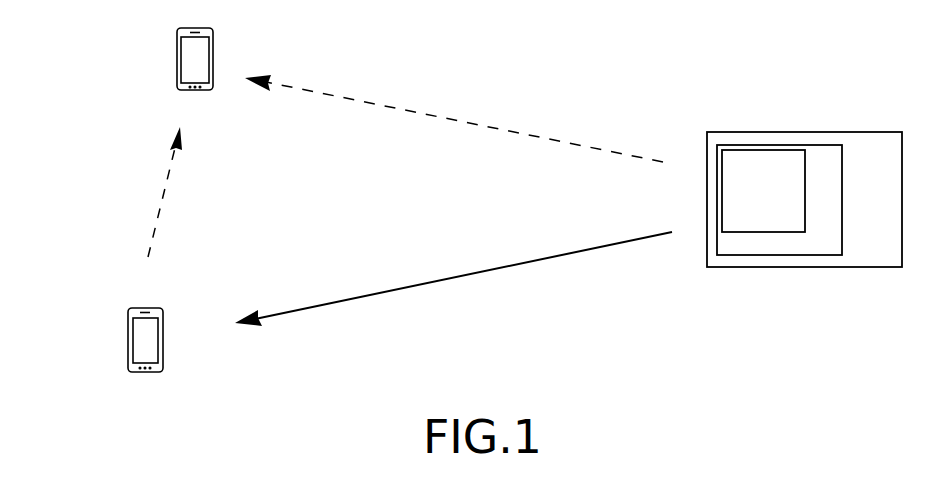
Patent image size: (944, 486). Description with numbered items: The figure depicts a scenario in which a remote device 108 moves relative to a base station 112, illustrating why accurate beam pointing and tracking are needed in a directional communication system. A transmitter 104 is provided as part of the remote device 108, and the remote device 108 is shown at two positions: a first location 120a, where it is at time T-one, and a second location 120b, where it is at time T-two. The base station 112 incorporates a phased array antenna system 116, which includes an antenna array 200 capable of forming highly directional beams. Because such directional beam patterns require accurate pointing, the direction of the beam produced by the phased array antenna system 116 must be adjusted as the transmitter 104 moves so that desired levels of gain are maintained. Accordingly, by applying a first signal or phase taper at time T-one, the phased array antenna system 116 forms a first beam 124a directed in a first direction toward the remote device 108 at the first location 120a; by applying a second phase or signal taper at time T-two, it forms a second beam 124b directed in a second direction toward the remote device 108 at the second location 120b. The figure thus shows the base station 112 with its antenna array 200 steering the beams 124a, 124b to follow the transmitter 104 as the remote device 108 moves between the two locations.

The transmitter 104 is at (205, 90).
The remote device 108 is at (168, 43).
The base station 112 is at (855, 132).
The phased array antenna system 116 is at (735, 150).
The antenna array 200 is at (790, 150).
The first location 120a is at (140, 325).
The second location 120b is at (181, 69).
The first beam 124a is at (480, 272).
The second beam 124b is at (492, 128).